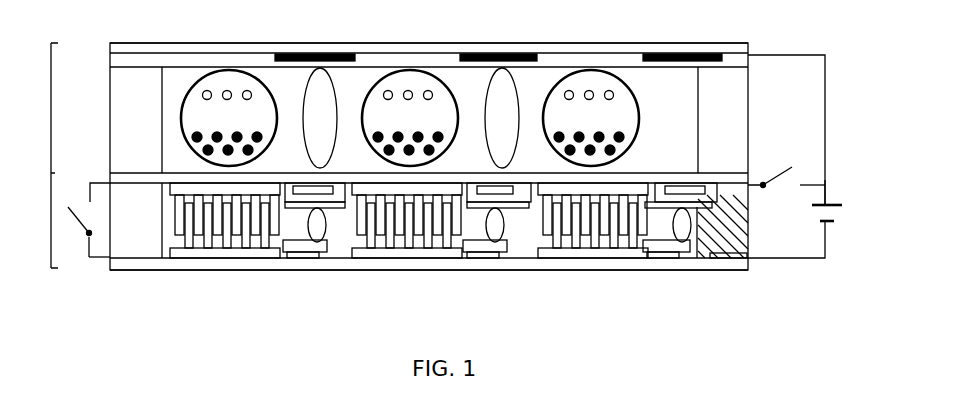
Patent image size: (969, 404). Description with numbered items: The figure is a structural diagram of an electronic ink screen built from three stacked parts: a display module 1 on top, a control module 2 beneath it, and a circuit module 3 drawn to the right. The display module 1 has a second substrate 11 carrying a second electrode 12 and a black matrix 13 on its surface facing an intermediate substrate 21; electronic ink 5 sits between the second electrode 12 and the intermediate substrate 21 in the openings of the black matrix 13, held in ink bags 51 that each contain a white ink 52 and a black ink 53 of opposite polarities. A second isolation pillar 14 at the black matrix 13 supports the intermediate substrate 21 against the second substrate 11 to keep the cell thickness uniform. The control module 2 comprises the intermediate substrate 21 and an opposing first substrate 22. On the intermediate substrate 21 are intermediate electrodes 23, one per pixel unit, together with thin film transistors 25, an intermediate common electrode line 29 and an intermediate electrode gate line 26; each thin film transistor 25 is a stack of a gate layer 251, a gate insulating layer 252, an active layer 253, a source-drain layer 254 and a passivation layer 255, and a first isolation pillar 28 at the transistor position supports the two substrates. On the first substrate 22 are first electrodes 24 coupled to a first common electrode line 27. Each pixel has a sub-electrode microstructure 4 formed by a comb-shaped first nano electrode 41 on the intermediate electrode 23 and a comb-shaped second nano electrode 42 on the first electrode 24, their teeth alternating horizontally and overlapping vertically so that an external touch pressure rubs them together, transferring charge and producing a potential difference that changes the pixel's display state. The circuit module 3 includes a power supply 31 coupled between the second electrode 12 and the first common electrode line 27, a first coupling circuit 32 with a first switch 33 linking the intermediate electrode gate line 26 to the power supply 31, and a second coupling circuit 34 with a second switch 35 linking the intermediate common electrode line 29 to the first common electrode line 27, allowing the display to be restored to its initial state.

The display module 1 is at (46, 108).
The control module 2 is at (46, 220).
The circuit module 3 is at (826, 140).
The sub-electrode microstructure 4 is at (213, 243).
The electronic ink 5 is at (222, 78).
The second substrate 11 is at (560, 52).
The second electrode 12 is at (647, 43).
The black matrix 13 is at (703, 53).
The second isolation pillar 14 is at (337, 97).
The intermediate substrate 21 is at (750, 182).
The first substrate 22 is at (280, 271).
The intermediate electrode 23 is at (349, 208).
The first electrode 24 is at (397, 248).
The thin film transistor 25 is at (503, 205).
The intermediate electrode gate line 26 is at (705, 259).
The first common electrode line 27 is at (110, 262).
The first isolation pillar 28 is at (752, 187).
The intermediate common electrode line 29 is at (108, 183).
The power supply 31 is at (824, 232).
The first coupling circuit 32 is at (826, 186).
The first switch 33 is at (834, 221).
The second coupling circuit 34 is at (88, 244).
The second switch 35 is at (78, 218).
The first nano electrode 41 is at (207, 243).
The second nano electrode 42 is at (223, 238).
The ink bag 51 is at (232, 93).
The white ink 52 is at (251, 96).
The black ink 53 is at (259, 132).
The gate layer 251 is at (712, 186).
The gate insulating layer 252 is at (718, 197).
The active layer 253 is at (722, 210).
The source-drain layer 254 is at (722, 222).
The passivation layer 255 is at (732, 250).